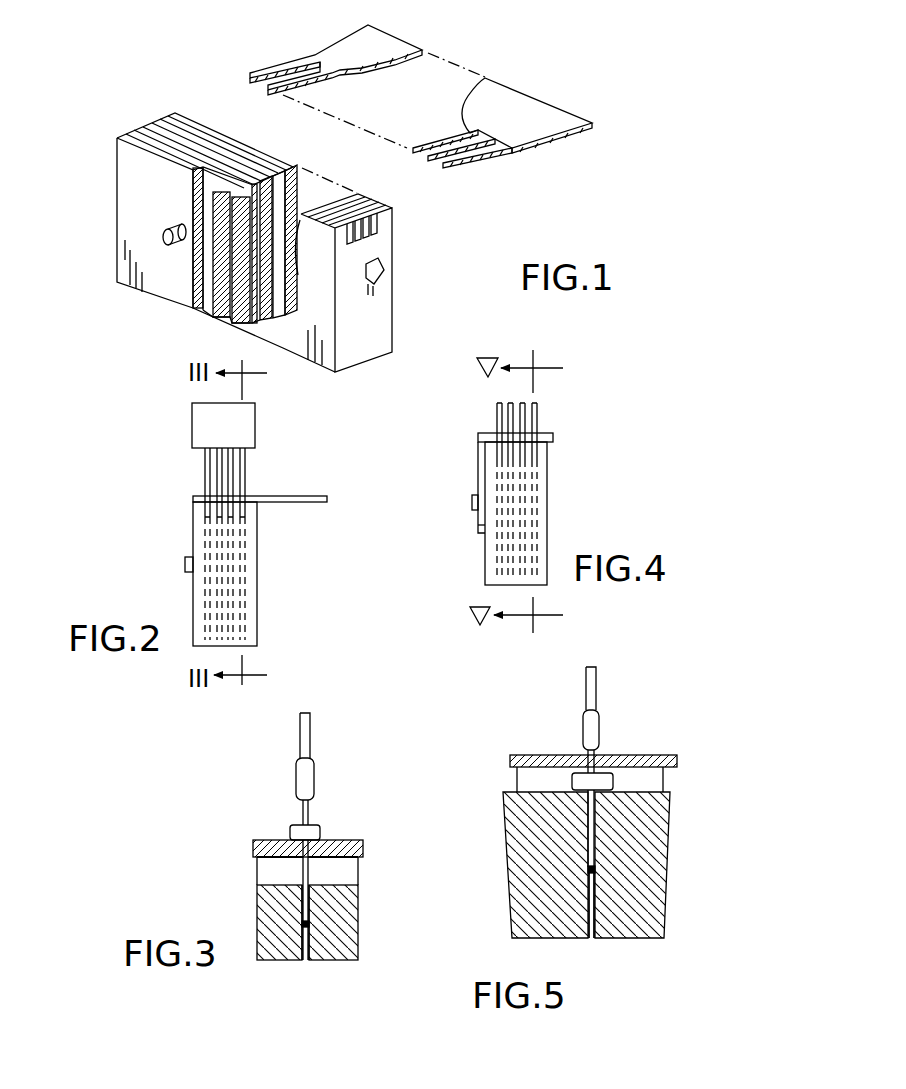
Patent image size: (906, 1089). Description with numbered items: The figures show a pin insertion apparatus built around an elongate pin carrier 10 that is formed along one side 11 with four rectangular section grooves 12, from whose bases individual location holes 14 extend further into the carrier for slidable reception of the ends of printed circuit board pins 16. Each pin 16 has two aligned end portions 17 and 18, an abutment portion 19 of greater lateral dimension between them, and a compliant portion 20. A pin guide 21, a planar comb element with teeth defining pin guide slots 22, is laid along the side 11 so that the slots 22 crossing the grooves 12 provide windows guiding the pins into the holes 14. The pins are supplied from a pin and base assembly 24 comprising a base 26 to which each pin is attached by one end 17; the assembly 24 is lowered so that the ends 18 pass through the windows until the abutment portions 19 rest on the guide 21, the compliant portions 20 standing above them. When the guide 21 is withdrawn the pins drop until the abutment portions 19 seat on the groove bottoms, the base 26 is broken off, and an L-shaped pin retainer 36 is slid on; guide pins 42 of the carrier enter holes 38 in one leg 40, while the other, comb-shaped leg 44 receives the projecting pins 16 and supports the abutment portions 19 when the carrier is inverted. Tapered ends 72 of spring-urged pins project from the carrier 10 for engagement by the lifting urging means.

In FIG. 1, the pin carrier 10 is at (112, 178).
In FIG. 3, the pin carrier 10 is at (366, 910).
In FIG. 5, the pin carrier 10 is at (676, 852).
In FIG. 1, the side of the carrier 11 is at (187, 118).
In FIG. 1, the grooves 12 is at (375, 238).
In FIG. 3, the grooves 12 is at (348, 873).
In FIG. 5, the grooves 12 is at (637, 782).
In FIG. 1, the holes 14 is at (291, 326).
In FIG. 3, the holes 14 is at (310, 962).
In FIG. 5, the holes 14 is at (592, 942).
In FIG. 2, the printed circuit board pins 16 is at (204, 478).
In FIG. 4, the printed circuit board pins 16 is at (538, 410).
In FIG. 3, the printed circuit board pins 16 is at (297, 775).
In FIG. 3, the end portion 17 is at (310, 740).
In FIG. 5, the end portion 17 is at (597, 688).
In FIG. 3, the end portion 18 is at (267, 873).
In FIG. 5, the end portion 18 is at (587, 853).
In FIG. 3, the abutment portion 19 is at (320, 833).
In FIG. 5, the abutment portion 19 is at (572, 778).
In FIG. 3, the compliant portion 20 is at (314, 788).
In FIG. 5, the compliant portion 20 is at (600, 737).
In FIG. 1, the pin guide 21 is at (348, 45).
In FIG. 3, the pin guide 21 is at (253, 845).
In FIG. 1, the pin guide slots 22 is at (262, 82).
In FIG. 2, the pin and base assembly 24 is at (188, 441).
In FIG. 2, the base 26 is at (255, 437).
In FIG. 4, the pin retainer 36 is at (480, 483).
In FIG. 4, the holes 38 is at (474, 531).
In FIG. 4, the leg 40 is at (480, 472).
In FIG. 1, the guide pins 42 is at (162, 238).
In FIG. 2, the guide pins 42 is at (185, 568).
In FIG. 4, the guide pins 42 is at (472, 507).
In FIG. 4, the leg 44 is at (553, 438).
In FIG. 5, the leg 44 is at (537, 756).
In FIG. 1, the tapered ends 72 is at (385, 277).